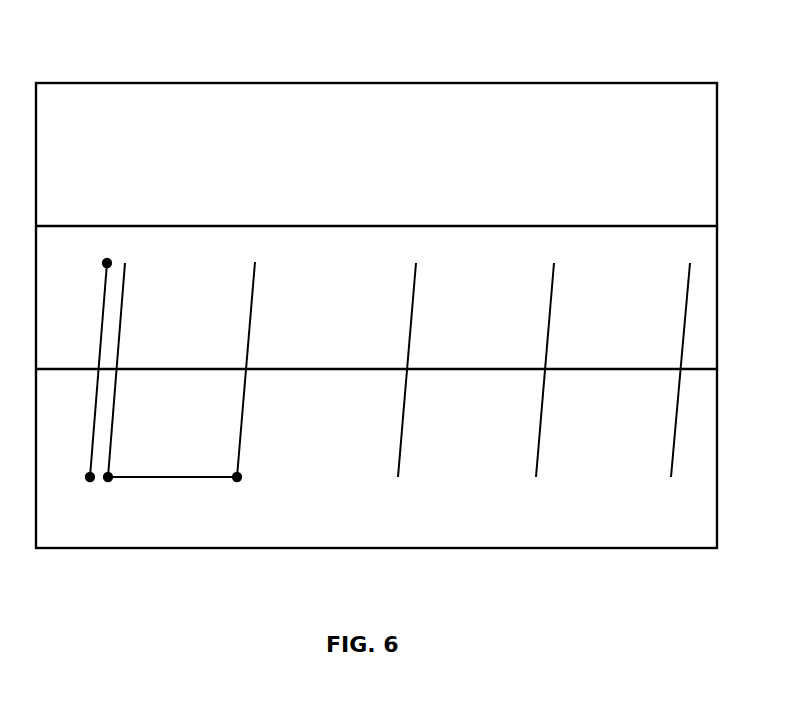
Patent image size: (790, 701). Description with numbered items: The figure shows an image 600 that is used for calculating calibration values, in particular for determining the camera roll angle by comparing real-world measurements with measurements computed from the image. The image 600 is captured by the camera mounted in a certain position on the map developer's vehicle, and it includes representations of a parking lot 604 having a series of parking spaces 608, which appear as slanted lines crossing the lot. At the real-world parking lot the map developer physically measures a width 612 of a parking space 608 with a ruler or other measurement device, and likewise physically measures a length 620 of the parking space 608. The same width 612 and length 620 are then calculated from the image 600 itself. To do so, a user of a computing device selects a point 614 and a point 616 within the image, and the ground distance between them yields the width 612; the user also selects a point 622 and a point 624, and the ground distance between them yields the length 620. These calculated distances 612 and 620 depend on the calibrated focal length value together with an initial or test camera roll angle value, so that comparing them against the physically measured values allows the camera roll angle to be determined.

The image 600 is at (662, 83).
The parking lot 604 is at (627, 245).
The parking spaces 608 is at (353, 300).
The width 612 is at (185, 477).
The point 614 is at (108, 477).
The point 616 is at (237, 477).
The length 620 is at (98, 357).
The point 622 is at (90, 477).
The point 624 is at (107, 263).